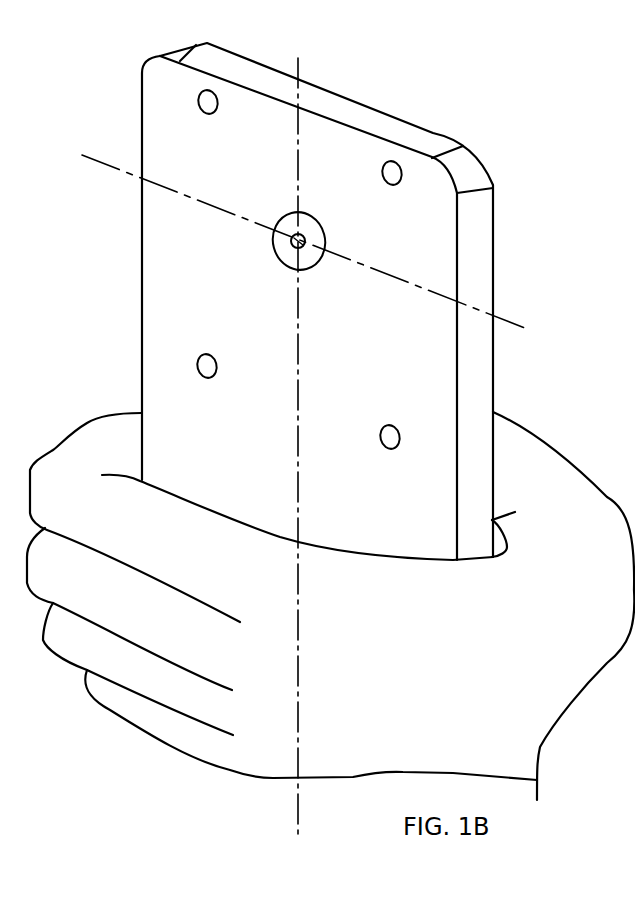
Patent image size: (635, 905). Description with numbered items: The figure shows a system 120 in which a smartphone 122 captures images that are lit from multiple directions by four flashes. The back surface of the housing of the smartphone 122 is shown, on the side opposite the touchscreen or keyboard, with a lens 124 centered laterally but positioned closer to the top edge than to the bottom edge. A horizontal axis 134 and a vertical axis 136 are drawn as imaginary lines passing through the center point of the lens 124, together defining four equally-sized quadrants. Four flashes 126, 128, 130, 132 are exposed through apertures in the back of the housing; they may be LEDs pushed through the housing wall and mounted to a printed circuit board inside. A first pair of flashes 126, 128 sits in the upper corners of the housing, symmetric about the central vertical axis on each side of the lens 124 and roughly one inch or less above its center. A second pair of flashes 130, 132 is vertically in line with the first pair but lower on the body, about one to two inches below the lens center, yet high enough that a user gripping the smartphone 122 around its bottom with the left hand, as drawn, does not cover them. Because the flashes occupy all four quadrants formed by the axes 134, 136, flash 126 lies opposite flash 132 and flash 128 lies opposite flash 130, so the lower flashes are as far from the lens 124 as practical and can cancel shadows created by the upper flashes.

The system 120 is at (487, 63).
The smartphone 122 is at (140, 243).
The lens 124 is at (273, 242).
The flash 126 is at (198, 101).
The flash 128 is at (400, 176).
The flash 130 is at (198, 366).
The flash 132 is at (400, 438).
The horizontal axis 134 is at (515, 320).
The vertical axis 136 is at (297, 800).